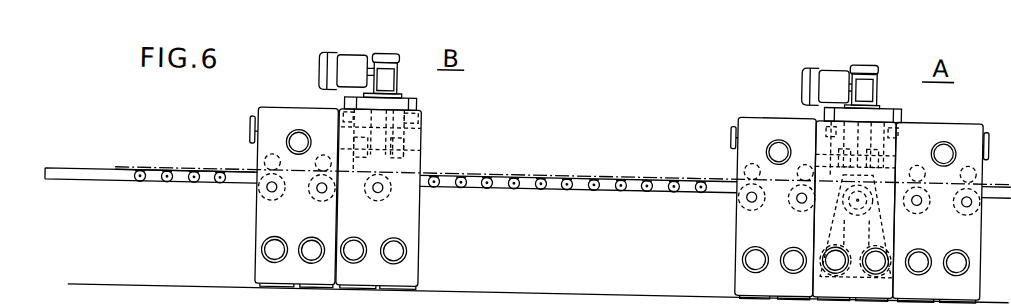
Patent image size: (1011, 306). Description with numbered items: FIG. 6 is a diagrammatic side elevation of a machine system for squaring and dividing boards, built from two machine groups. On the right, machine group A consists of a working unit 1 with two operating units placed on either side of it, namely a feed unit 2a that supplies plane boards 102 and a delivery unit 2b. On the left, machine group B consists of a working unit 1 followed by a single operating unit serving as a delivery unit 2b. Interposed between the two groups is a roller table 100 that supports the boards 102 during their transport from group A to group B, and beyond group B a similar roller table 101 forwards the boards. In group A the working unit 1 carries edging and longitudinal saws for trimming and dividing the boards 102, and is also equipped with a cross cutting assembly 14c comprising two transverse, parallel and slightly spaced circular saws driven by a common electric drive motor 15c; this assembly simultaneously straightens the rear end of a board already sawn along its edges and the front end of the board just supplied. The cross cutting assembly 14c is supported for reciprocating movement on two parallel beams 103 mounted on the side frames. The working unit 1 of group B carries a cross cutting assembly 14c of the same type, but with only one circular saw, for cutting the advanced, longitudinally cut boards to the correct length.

The working unit 1 is at (413, 134).
The feed unit 2a is at (953, 124).
The delivery unit 2b is at (272, 119).
The cross cutting assembly 14c is at (350, 140).
The electric drive motor 15c is at (348, 70).
The roller table 100 is at (582, 186).
The roller table 101 is at (183, 189).
The plane board 102 is at (574, 168).
The parallel beams 103 is at (832, 119).